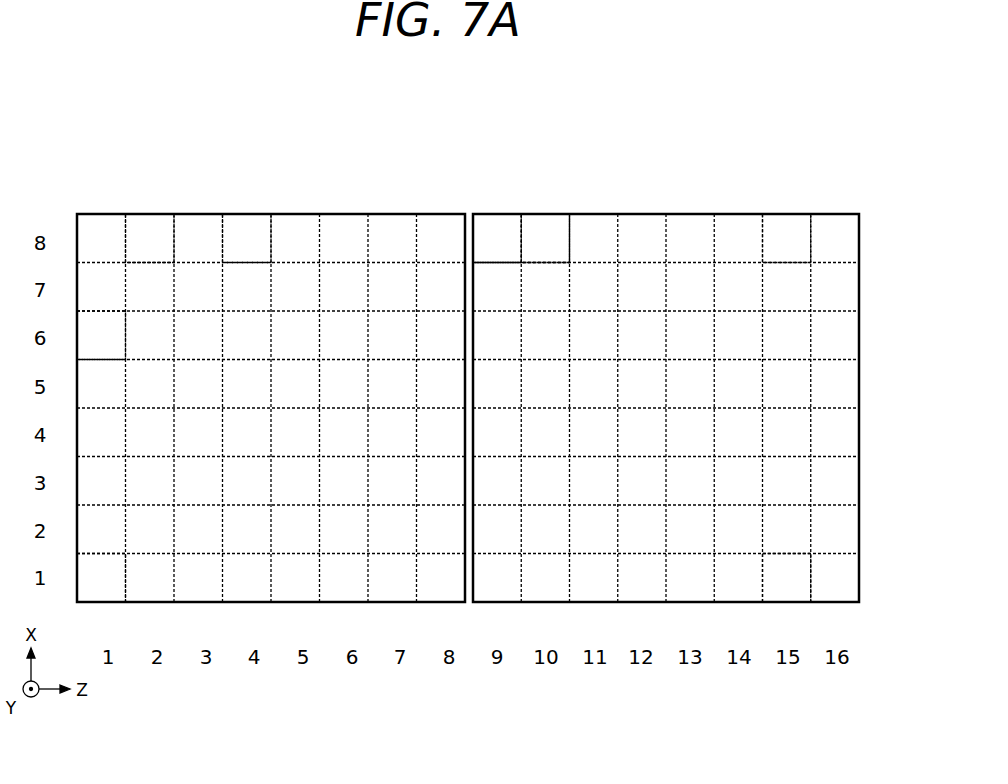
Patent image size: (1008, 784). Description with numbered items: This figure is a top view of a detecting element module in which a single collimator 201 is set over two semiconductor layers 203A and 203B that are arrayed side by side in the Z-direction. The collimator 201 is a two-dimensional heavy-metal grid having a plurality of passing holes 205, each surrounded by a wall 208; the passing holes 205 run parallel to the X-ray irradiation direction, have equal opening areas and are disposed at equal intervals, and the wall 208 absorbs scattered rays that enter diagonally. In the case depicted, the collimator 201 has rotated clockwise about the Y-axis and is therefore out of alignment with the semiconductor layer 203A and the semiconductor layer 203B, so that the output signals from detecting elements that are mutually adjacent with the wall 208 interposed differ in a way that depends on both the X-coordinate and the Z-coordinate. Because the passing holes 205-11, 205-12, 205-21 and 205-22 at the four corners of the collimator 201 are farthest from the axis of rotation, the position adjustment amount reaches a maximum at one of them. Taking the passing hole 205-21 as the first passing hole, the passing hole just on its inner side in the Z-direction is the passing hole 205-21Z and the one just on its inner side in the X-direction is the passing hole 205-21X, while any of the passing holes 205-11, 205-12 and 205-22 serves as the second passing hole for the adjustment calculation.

The collimator 201 is at (618, 144).
The semiconductor layer 203A is at (305, 214).
The semiconductor layer 203B is at (687, 214).
The passing hole 205 is at (528, 242).
The wall 208 is at (558, 214).
The passing hole 205-21X is at (105, 330).
The passing hole 205-21 is at (138, 236).
The passing hole 205-21Z is at (237, 235).
The passing hole 205-22 is at (795, 250).
The passing hole 205-11 is at (115, 567).
The passing hole 205-12 is at (797, 577).